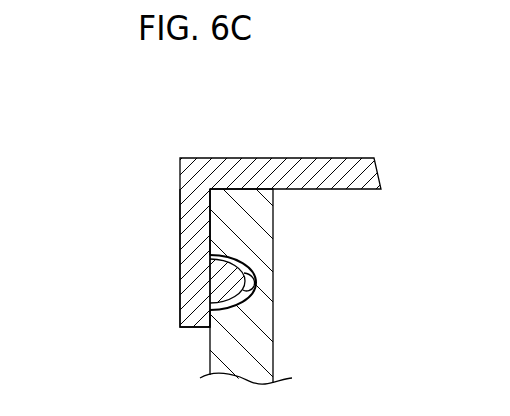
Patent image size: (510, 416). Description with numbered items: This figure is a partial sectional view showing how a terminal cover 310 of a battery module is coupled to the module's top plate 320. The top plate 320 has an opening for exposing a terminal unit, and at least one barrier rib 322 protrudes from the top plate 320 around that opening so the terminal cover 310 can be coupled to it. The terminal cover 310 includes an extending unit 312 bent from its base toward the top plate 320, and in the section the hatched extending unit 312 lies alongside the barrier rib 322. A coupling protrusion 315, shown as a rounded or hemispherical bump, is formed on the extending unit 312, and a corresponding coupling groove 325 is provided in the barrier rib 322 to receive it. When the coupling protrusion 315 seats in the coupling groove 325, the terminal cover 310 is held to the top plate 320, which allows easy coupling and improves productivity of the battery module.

The terminal cover 310 is at (178, 183).
The extending unit 312 is at (190, 272).
The coupling protrusion 315 is at (245, 298).
The top plate 320 is at (207, 350).
The barrier rib 322 is at (257, 352).
The coupling groove 325 is at (243, 262).